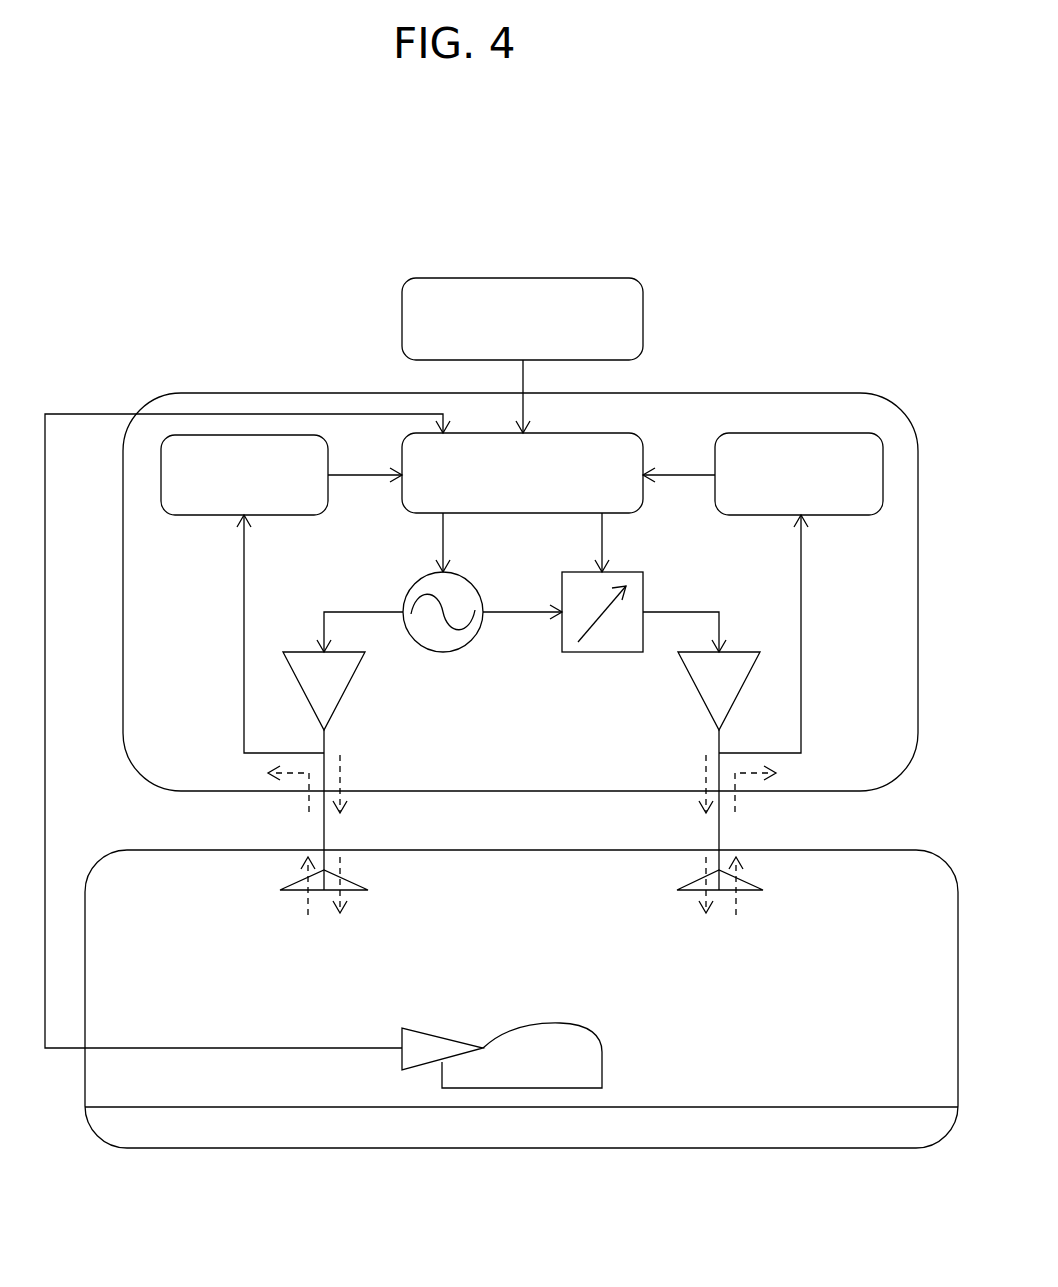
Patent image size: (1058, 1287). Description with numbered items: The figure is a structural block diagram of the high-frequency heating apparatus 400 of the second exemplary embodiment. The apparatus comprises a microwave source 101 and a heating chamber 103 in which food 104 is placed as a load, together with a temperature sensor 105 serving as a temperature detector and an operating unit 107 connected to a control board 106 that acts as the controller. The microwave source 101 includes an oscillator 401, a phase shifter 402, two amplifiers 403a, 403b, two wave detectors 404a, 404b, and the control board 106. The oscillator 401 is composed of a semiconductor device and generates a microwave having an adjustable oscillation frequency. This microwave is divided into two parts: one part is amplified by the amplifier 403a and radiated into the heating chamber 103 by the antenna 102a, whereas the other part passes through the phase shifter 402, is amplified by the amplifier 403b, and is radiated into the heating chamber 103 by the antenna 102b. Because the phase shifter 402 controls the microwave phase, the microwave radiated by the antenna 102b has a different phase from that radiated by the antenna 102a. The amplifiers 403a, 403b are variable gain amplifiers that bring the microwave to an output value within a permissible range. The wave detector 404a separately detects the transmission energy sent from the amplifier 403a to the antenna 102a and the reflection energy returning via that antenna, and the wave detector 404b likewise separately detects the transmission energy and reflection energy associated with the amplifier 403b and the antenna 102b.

The high-frequency heating apparatus 400 is at (129, 272).
The microwave source 101 is at (355, 393).
The antenna 102a is at (297, 890).
The antenna 102b is at (745, 890).
The heating chamber 103 is at (855, 1088).
The food 104 is at (533, 1090).
The temperature sensor 105 is at (423, 1065).
The control board 106 is at (628, 433).
The operating unit 107 is at (446, 278).
The oscillator 401 is at (410, 585).
The phase shifter 402 is at (645, 585).
The amplifier 403a is at (352, 676).
The amplifier 403b is at (692, 676).
The wave detector 404a is at (228, 435).
The wave detector 404b is at (840, 433).